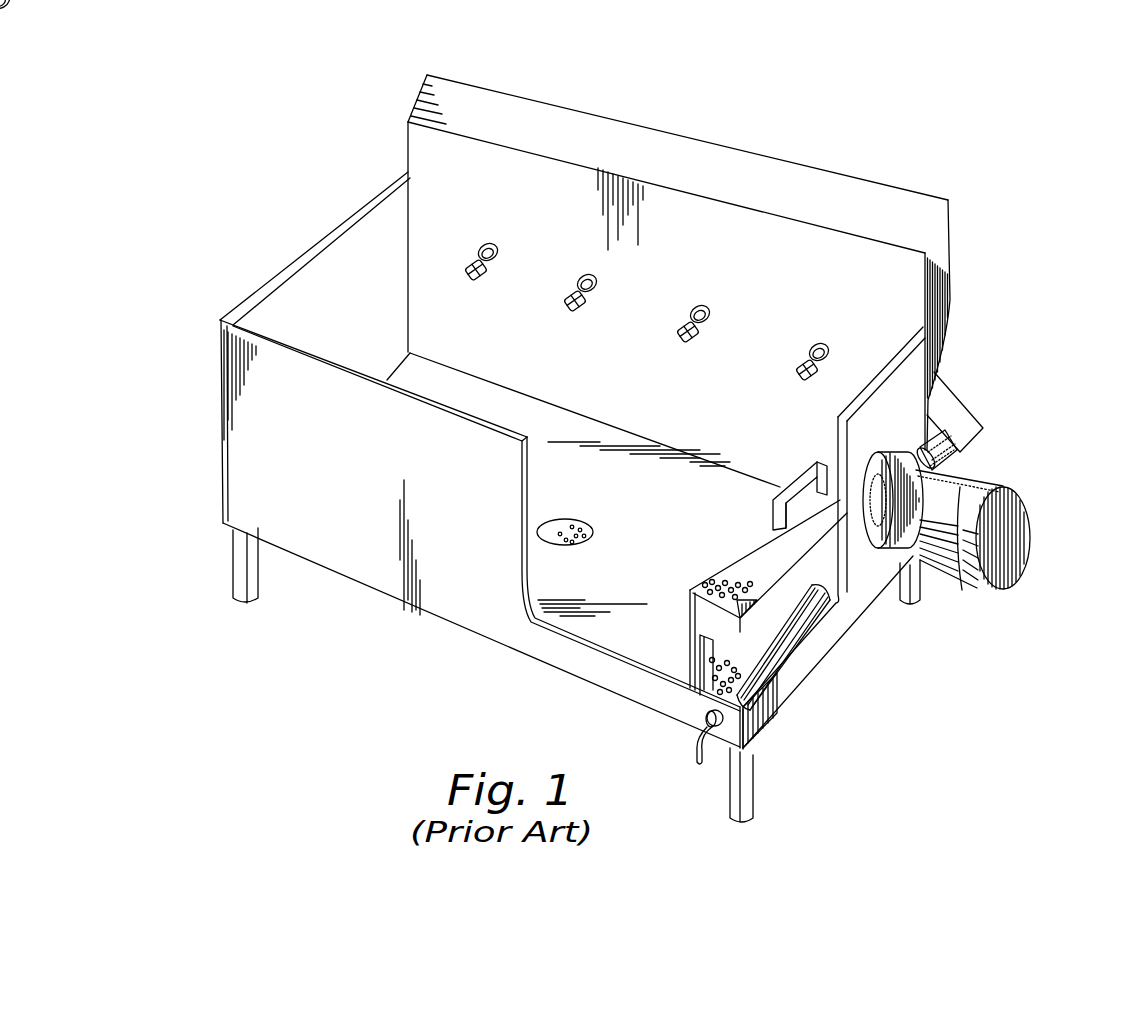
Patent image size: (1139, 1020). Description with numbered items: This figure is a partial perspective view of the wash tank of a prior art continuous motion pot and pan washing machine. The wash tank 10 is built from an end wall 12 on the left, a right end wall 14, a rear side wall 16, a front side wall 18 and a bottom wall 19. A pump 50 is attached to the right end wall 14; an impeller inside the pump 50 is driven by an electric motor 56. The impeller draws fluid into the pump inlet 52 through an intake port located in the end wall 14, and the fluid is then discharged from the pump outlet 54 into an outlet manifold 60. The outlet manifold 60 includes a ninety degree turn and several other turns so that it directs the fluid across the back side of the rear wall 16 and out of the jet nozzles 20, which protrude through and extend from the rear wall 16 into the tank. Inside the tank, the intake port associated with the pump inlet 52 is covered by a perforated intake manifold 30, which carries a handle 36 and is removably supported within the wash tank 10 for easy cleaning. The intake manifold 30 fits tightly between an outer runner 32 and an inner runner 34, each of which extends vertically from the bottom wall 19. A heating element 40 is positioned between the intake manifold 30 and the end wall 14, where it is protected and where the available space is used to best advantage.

The wash tank 10 is at (297, 183).
The end wall 12 is at (295, 308).
The right end wall 14 is at (916, 362).
The rear side wall 16 is at (793, 261).
The front side wall 18 is at (360, 548).
The bottom wall 19 is at (543, 430).
The jet nozzles 20 is at (499, 254).
The intake manifold 30 is at (762, 537).
The outer runner 32 is at (693, 593).
The inner runner 34 is at (703, 690).
The handle 36 is at (803, 472).
The heating element 40 is at (797, 647).
The pump 50 is at (1033, 542).
The pump inlet 52 is at (877, 550).
The pump outlet 54 is at (962, 458).
The electric motor 56 is at (963, 587).
The outlet manifold 60 is at (963, 423).